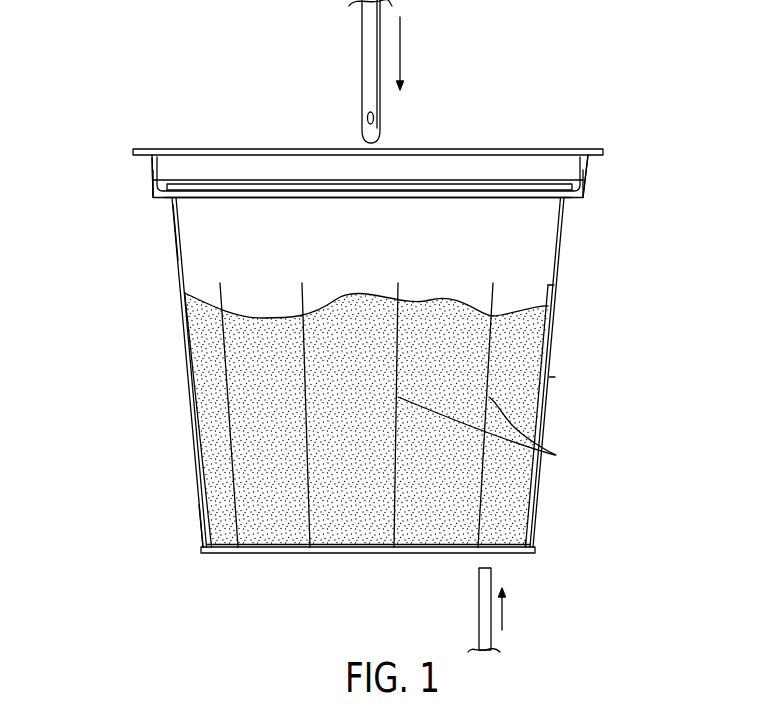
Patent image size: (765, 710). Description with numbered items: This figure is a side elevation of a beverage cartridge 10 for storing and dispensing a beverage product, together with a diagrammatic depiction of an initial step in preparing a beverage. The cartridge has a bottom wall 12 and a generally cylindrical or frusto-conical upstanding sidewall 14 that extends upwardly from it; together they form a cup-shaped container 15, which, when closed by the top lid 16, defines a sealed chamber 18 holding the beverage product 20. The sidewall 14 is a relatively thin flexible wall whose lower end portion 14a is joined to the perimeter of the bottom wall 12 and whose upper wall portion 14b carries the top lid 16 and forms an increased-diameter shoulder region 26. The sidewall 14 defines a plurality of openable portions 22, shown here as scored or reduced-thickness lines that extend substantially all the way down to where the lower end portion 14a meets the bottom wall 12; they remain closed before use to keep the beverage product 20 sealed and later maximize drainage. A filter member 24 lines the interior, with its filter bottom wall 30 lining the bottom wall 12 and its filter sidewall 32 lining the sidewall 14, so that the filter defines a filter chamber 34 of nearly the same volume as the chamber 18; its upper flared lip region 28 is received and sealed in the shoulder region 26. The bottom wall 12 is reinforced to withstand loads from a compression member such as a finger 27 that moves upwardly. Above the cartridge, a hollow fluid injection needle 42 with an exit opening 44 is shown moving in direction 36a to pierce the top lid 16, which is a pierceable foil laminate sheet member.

The beverage cartridge 10 is at (72, 68).
The bottom wall 12 is at (298, 553).
The sidewall 14 is at (187, 378).
The lower end portion 14a is at (166, 547).
The upper wall portion 14b is at (129, 176).
The cup-shaped container 15 is at (621, 272).
The top lid 16 is at (455, 148).
The sealed chamber 18 is at (553, 215).
The beverage product 20 is at (333, 300).
The openable portions 22 is at (223, 348).
The filter member 24 is at (253, 182).
The shoulder region 26 is at (588, 168).
The finger 27 is at (478, 623).
The flared lip region 28 is at (166, 166).
The filter bottom wall 30 is at (510, 545).
The filter sidewall 32 is at (208, 445).
The filter chamber 34 is at (188, 233).
The needle insertion direction 36a is at (342, 122).
The fluid injection needle 42 is at (360, 68).
The opening 44 is at (375, 118).